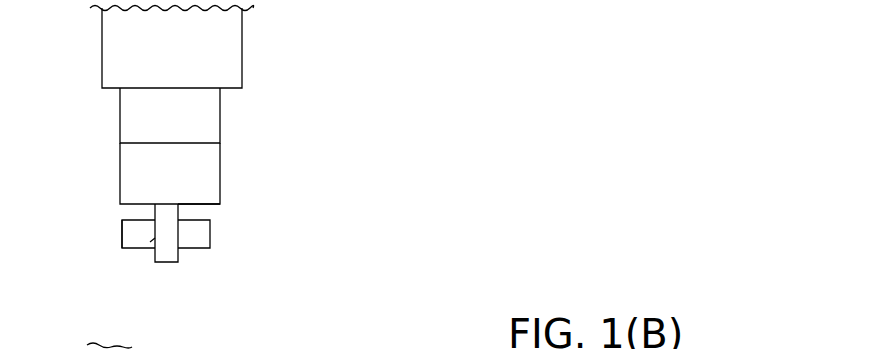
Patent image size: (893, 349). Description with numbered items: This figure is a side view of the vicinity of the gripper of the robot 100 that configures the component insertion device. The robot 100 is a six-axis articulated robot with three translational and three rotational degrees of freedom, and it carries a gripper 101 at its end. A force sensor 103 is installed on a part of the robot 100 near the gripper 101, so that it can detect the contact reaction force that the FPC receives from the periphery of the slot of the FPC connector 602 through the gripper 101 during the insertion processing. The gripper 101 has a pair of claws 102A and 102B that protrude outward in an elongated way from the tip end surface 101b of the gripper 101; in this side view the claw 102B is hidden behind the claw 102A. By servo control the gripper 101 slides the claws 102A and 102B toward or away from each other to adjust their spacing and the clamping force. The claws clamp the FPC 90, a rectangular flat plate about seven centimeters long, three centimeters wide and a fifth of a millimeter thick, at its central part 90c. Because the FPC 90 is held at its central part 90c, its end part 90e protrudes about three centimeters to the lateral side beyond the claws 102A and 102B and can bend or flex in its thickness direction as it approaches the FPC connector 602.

The robot 100 is at (244, 51).
The force sensor 103 is at (220, 113).
The gripper 101 is at (220, 163).
The tip end surface 101b is at (197, 214).
The claw 102A is at (178, 255).
The claw 102B is at (168, 272).
The FPC 90 is at (210, 234).
The end part 90e is at (128, 234).
The central part 90c is at (155, 237).
The FPC connector 602 is at (148, 348).